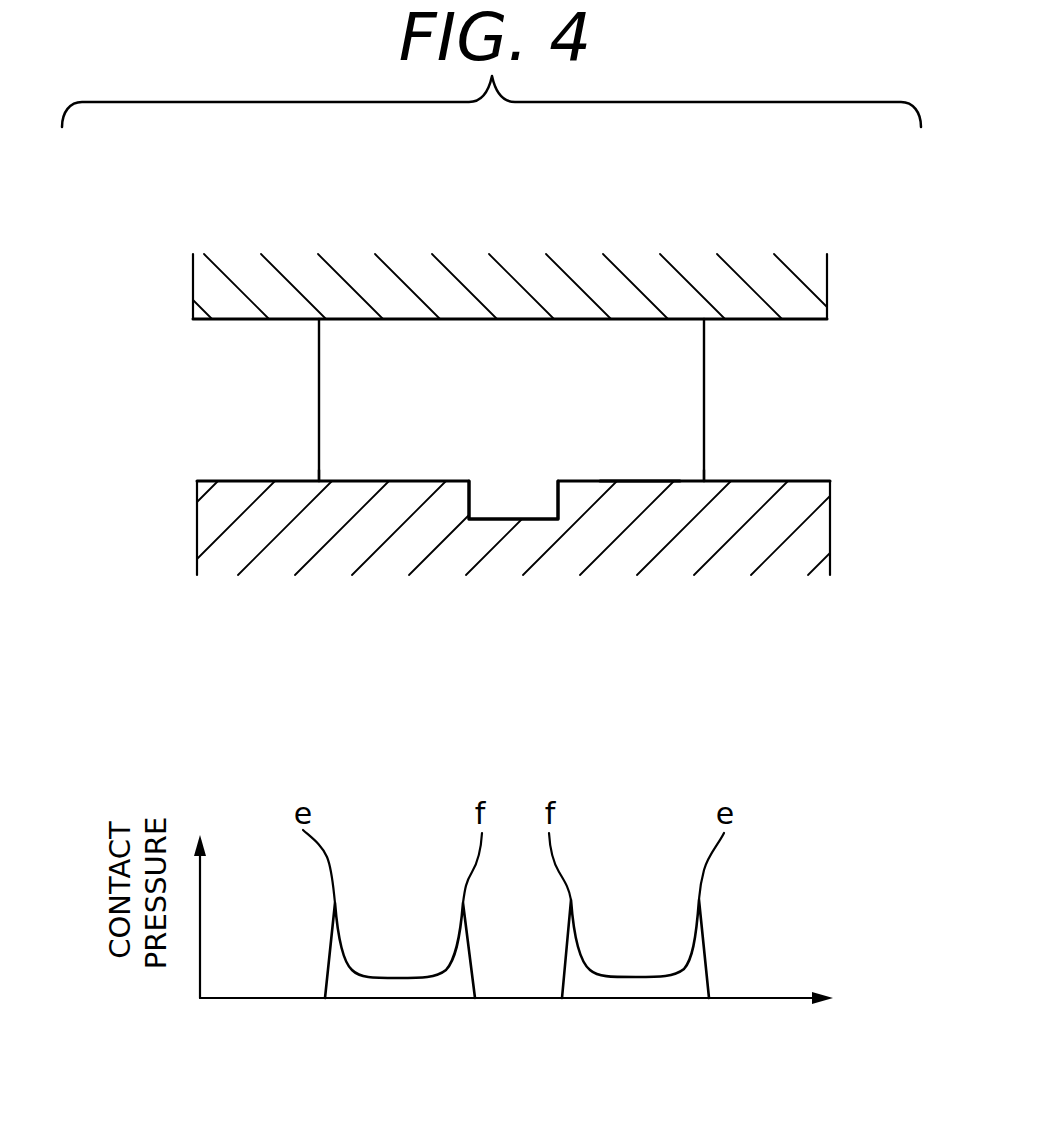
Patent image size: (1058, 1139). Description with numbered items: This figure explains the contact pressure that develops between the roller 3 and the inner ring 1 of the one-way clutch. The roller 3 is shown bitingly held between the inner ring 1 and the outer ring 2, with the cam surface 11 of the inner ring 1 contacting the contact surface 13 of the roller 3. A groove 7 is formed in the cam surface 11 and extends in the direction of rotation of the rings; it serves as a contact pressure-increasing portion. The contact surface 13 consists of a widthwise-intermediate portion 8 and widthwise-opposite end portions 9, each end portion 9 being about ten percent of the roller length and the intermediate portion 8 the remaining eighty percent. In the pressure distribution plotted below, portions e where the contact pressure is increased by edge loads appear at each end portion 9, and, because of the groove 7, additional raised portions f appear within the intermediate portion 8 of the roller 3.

The inner ring 1 is at (776, 477).
The outer ring 2 is at (268, 322).
The roller 3 is at (712, 377).
The groove 7 is at (488, 481).
The widthwise-intermediate portion 8 is at (522, 486).
The widthwise-opposite end portion 9 is at (329, 488).
The cam surface 11 is at (408, 481).
The contact surface 13 is at (635, 482).